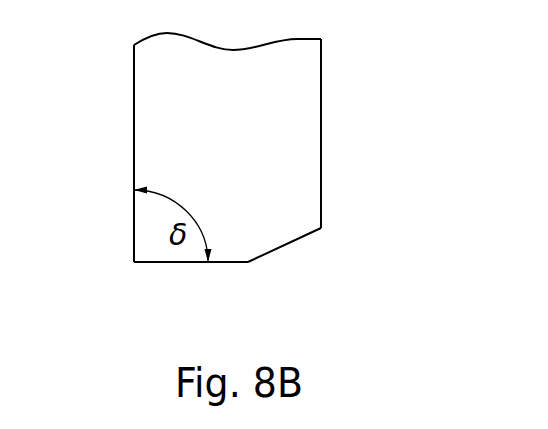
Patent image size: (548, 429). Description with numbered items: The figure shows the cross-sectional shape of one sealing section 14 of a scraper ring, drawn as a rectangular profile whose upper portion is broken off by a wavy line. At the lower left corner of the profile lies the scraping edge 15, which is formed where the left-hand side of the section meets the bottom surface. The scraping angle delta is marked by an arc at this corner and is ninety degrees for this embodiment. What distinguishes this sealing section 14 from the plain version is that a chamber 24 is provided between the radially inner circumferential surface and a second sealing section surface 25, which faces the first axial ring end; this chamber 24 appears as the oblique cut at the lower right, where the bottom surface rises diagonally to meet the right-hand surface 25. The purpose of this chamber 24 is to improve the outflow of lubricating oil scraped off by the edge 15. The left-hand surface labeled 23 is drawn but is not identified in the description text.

The sealing section 14 is at (287, 132).
The scraping edge 15 is at (134, 262).
The leading edge 23 is at (134, 103).
The chamber 24 is at (287, 247).
The second sealing section surface 25 is at (321, 132).